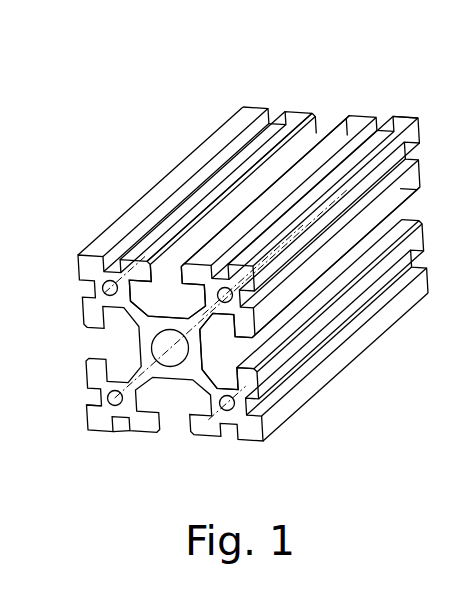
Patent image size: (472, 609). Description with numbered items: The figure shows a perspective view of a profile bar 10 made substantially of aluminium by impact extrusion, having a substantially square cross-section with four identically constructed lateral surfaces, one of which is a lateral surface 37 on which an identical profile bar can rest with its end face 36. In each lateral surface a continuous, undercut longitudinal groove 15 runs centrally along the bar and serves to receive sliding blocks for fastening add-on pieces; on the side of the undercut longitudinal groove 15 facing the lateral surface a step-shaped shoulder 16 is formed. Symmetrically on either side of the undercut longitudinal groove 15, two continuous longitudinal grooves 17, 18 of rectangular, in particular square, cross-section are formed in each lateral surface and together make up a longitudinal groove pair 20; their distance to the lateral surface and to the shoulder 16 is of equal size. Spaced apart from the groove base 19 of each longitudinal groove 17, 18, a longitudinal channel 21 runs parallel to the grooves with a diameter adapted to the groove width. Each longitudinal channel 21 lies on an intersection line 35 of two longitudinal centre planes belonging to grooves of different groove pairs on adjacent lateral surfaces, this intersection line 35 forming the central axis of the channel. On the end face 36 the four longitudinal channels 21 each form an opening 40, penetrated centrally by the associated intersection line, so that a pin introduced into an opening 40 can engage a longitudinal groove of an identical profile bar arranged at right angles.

The profile bar 10 is at (102, 160).
The undercut longitudinal groove 15 is at (170, 308).
The step-shaped shoulder 16 is at (383, 122).
The longitudinal groove 17 is at (272, 117).
The longitudinal groove 18 is at (388, 118).
The groove base 19 is at (116, 262).
The longitudinal groove pair 20 is at (397, 82).
The longitudinal channel 21 is at (102, 288).
The intersection line 35 is at (120, 255).
The end face 36 is at (138, 433).
The lateral surface 37 is at (215, 150).
The opening 40 is at (92, 396).